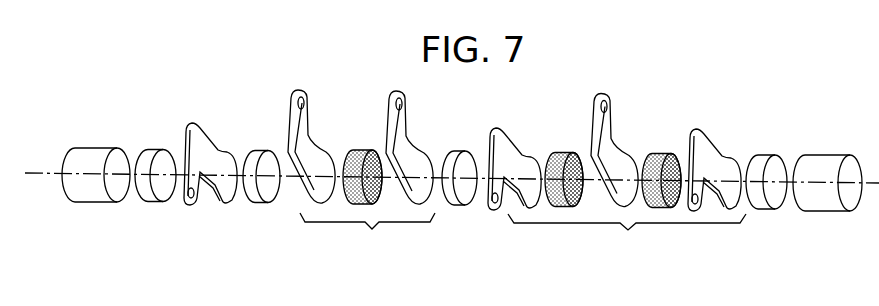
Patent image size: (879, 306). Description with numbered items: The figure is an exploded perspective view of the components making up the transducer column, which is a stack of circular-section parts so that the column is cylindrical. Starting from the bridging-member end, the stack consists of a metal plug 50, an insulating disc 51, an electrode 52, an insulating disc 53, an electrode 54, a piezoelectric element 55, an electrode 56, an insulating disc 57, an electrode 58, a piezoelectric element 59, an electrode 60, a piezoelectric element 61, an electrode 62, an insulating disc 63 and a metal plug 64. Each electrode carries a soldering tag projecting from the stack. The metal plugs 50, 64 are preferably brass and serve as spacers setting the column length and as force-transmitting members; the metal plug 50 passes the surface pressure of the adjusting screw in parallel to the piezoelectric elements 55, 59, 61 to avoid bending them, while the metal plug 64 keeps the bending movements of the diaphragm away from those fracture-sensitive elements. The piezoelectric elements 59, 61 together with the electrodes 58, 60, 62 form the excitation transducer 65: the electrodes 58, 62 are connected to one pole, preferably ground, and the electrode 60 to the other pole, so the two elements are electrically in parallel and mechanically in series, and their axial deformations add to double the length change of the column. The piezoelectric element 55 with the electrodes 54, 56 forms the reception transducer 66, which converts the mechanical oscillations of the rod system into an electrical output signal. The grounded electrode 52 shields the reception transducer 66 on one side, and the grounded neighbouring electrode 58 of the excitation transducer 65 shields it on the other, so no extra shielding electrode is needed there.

The metal plug 50 is at (97, 152).
The insulating disc 51 is at (152, 152).
The electrode 52 is at (208, 148).
The insulating disc 53 is at (257, 152).
The electrode 54 is at (310, 157).
The piezoelectric element 55 is at (362, 152).
The electrode 56 is at (415, 158).
The insulating disc 57 is at (457, 157).
The electrode 58 is at (515, 158).
The piezoelectric element 59 is at (560, 155).
The electrode 60 is at (615, 158).
The piezoelectric element 61 is at (662, 155).
The electrode 62 is at (718, 160).
The insulating disc 63 is at (764, 163).
The metal plug 64 is at (823, 160).
The excitation transducer 65 is at (627, 238).
The reception transducer 66 is at (367, 235).